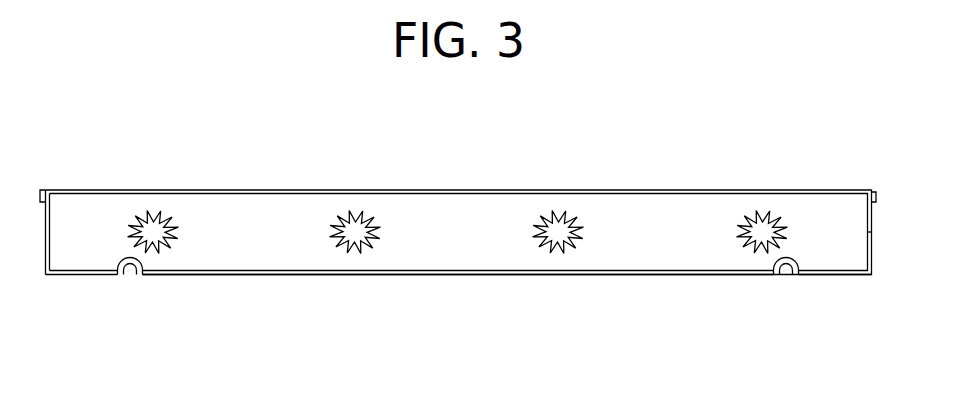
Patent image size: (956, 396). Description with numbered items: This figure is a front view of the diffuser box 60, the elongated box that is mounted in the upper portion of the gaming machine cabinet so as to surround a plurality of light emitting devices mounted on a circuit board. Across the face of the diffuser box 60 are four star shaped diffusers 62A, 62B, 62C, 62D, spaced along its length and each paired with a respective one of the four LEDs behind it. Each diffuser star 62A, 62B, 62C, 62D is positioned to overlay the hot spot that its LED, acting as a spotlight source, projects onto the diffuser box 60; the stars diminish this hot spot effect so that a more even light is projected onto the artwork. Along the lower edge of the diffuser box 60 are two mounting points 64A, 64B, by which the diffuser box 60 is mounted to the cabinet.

The diffuser box 60 is at (555, 275).
The star shaped diffuser 62A is at (172, 215).
The star shaped diffuser 62B is at (374, 218).
The star shaped diffuser 62C is at (577, 218).
The star shaped diffuser 62D is at (778, 216).
The mounting point 64A is at (130, 265).
The mounting point 64B is at (786, 265).